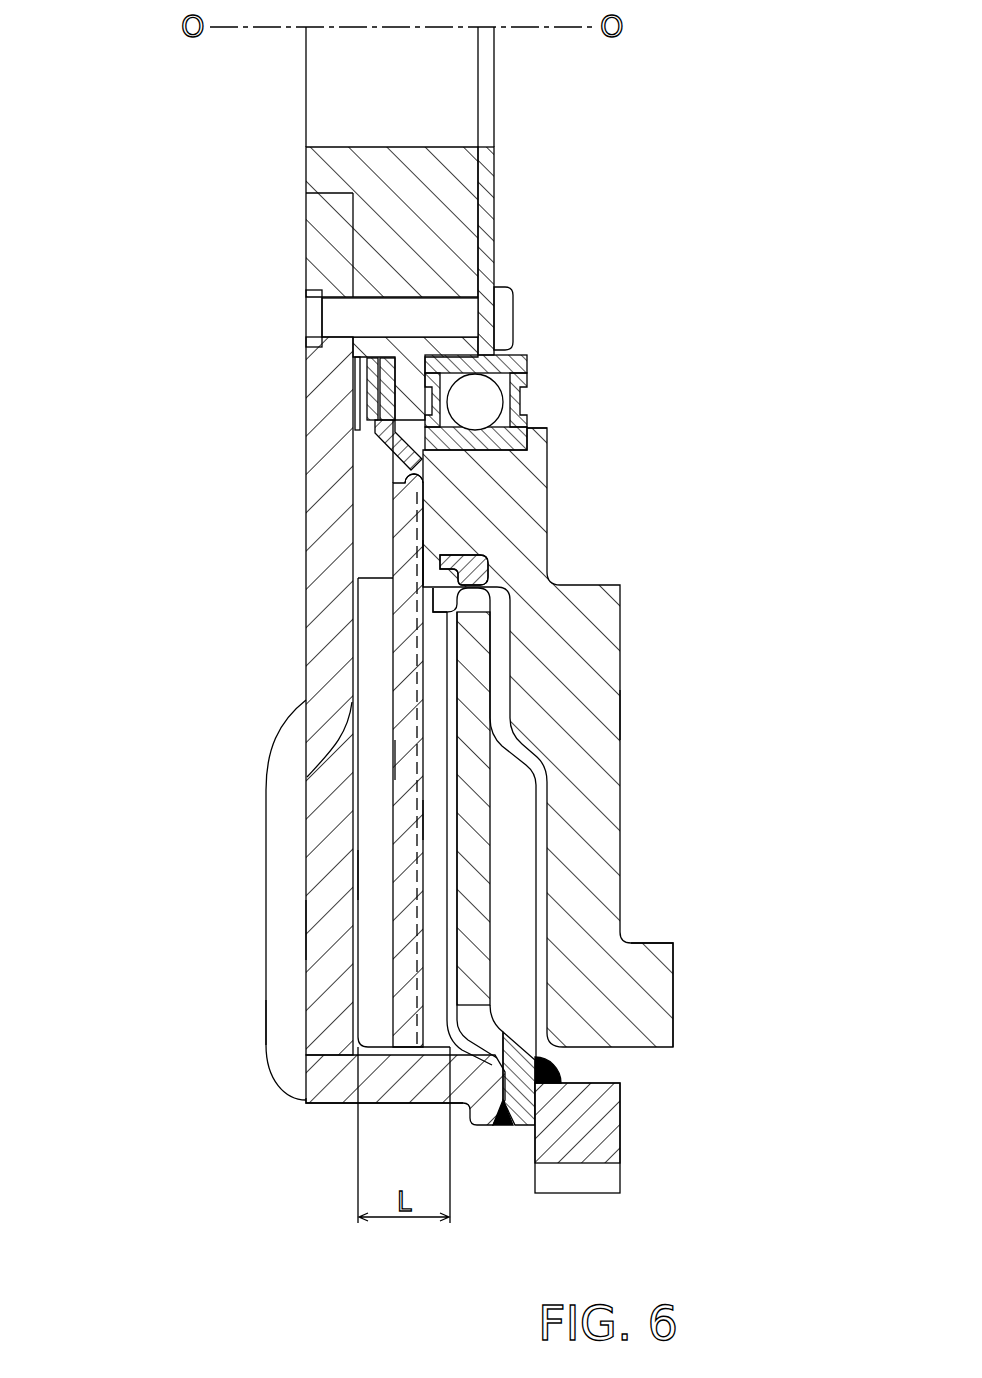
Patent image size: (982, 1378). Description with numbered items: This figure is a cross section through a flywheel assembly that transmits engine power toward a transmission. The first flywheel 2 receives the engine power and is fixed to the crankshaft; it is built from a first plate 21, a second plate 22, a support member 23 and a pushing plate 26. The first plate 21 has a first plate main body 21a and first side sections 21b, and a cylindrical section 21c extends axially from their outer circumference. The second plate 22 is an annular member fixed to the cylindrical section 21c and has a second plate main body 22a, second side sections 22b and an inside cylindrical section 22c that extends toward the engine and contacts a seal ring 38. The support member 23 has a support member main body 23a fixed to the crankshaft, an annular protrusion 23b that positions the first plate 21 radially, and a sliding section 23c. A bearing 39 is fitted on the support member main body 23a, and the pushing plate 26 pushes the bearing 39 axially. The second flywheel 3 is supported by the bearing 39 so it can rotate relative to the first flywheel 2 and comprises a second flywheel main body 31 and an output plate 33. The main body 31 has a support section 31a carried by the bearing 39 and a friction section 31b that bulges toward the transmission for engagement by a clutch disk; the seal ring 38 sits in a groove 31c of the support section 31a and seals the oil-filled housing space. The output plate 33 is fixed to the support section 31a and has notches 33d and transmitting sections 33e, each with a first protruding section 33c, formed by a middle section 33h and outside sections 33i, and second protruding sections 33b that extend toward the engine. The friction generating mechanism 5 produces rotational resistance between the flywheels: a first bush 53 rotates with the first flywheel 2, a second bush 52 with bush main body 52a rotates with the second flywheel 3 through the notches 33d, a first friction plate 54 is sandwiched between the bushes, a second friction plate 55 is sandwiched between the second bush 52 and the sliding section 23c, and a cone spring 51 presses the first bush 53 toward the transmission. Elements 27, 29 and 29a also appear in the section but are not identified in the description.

The first flywheel 2 is at (252, 1083).
The second flywheel 3 is at (698, 1039).
The friction generating mechanism 5 is at (282, 399).
The first plate 21 is at (292, 761).
The first plate main body 21a is at (326, 937).
The first side section 21b is at (270, 1005).
The cylindrical section 21c is at (398, 1112).
The second plate 22 is at (590, 856).
The second plate main body 22a is at (483, 843).
The second side section 22b is at (520, 905).
The inside cylindrical section 22c is at (468, 614).
The support member 23 is at (391, 307).
The support member main body 23a is at (370, 208).
The annular protrusion 23b is at (318, 160).
The sliding section 23c is at (412, 408).
The pushing plate 26 is at (490, 197).
The connecting member 27 is at (470, 316).
The seal ring 29 is at (635, 1125).
The seal lip 29a is at (572, 1076).
The second flywheel main body 31 is at (497, 744).
The support section 31a is at (512, 480).
The friction section 31b is at (585, 712).
The groove 31c is at (440, 568).
The output plate 33 is at (348, 782).
The second protruding section 33b is at (372, 876).
The first protruding section 33c is at (245, 818).
The notch 33d is at (413, 490).
The transmitting section 33e is at (395, 1085).
The middle section 33h is at (405, 760).
The outside section 33i is at (437, 823).
The seal ring 38 is at (480, 565).
The bearing 39 is at (539, 393).
The cone spring 51 is at (380, 417).
The second bush 52 is at (368, 451).
The bush main body 52a is at (355, 380).
The first bush 53 is at (366, 388).
The first friction plate 54 is at (316, 335).
The second friction plate 55 is at (528, 364).